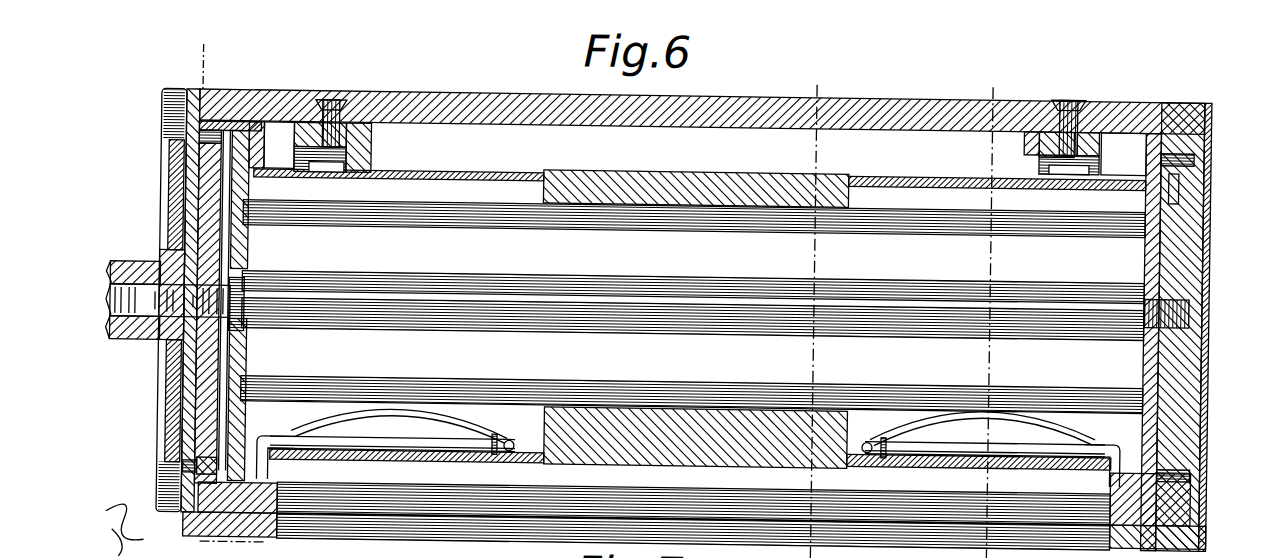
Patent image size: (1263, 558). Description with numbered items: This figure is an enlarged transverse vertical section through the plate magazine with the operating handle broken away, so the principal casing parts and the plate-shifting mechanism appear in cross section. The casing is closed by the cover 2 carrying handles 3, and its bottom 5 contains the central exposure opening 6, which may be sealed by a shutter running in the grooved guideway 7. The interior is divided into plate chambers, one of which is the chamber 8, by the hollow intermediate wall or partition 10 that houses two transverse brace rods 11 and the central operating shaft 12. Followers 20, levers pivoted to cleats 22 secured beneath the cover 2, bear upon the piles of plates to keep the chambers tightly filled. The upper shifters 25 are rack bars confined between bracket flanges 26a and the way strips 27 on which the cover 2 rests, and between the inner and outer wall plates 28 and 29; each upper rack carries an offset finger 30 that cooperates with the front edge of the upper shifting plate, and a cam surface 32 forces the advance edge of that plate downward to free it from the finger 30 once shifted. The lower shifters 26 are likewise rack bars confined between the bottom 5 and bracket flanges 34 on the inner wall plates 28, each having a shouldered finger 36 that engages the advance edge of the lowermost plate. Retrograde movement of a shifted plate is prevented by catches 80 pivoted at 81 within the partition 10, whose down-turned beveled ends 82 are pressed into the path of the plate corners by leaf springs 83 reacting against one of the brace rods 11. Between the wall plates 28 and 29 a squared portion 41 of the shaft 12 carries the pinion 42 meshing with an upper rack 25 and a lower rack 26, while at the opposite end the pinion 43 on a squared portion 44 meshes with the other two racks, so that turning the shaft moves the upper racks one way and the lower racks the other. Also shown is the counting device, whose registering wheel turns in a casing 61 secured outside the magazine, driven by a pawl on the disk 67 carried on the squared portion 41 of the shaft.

The cover 2 is at (874, 110).
The handles 3 is at (1162, 440).
The bottom 5 is at (268, 508).
The exposure opening 6 is at (517, 528).
The grooved guideway 7 is at (462, 545).
The plate chamber 8 is at (992, 307).
The intermediate wall or partition 10 is at (662, 359).
The transverse brace rods 11 is at (214, 44).
The operating shaft 12 is at (658, 276).
The followers 20 is at (1025, 134).
The cleats 22 is at (348, 98).
The upper shifters 25 is at (262, 124).
The lower shifters 26 is at (210, 460).
The bracket flanges 26a is at (278, 150).
The way strips 27 is at (200, 94).
The inner wall plates 28 is at (258, 181).
The outer wall plates 29 is at (188, 148).
The offset finger 30 is at (1140, 135).
The cam surface 32 is at (370, 158).
The bracket flanges 34 is at (258, 436).
The shouldered finger 36 is at (282, 458).
The squared portion 41 is at (232, 280).
The pinion 42 is at (245, 248).
The pinion 43 is at (1190, 218).
The squared portion 44 is at (1182, 298).
The casing 61 is at (190, 466).
The disk 67 is at (180, 370).
The catches 80 is at (356, 435).
The pivot 81 is at (511, 437).
The down-turned beveled ends 82 is at (322, 458).
The leaf springs 83 is at (442, 408).